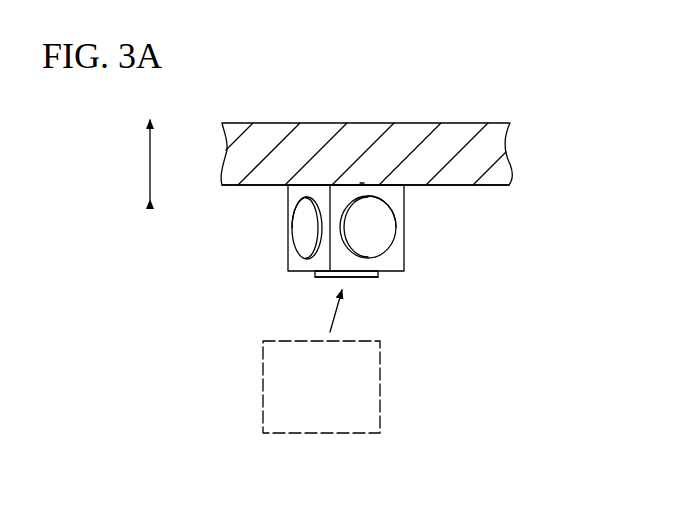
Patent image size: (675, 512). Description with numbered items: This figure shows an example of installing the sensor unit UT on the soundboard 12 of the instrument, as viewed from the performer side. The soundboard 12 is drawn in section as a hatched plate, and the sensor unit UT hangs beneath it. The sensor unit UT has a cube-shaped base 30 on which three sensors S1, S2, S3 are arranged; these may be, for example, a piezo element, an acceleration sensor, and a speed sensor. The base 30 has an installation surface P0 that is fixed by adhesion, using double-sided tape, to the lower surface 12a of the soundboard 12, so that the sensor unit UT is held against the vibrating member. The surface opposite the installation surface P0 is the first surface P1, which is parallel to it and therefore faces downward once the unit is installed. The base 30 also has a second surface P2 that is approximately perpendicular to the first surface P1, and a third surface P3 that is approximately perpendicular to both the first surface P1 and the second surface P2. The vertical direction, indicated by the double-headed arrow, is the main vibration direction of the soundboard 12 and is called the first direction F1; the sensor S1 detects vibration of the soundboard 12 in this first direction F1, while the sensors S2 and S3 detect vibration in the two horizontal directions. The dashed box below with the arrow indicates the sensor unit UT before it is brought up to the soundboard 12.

The soundboard 12 is at (445, 122).
The lower surface 12a is at (427, 188).
The base 30 is at (405, 272).
The installation surface P0 is at (362, 182).
The first surface P1 is at (393, 273).
The second surface P2 is at (398, 200).
The third surface P3 is at (297, 197).
The sensor S1 is at (367, 278).
The sensor S2 is at (387, 235).
The sensor S3 is at (300, 233).
The sensor unit UT is at (288, 273).
The first direction F1 is at (150, 164).